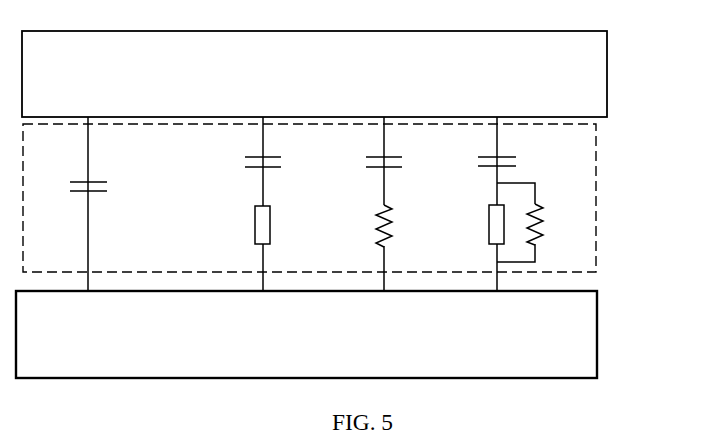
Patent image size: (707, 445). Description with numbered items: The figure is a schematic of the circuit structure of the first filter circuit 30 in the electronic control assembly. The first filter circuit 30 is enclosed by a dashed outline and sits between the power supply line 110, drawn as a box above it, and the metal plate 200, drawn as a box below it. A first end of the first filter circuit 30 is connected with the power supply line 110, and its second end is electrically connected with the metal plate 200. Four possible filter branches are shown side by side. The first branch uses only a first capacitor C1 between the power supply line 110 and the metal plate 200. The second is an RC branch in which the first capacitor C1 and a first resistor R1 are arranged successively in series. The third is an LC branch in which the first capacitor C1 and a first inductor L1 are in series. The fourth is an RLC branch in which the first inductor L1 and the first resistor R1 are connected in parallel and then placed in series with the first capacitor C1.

The power supply line 110 is at (607, 76).
The metal plate 200 is at (597, 334).
The first filter circuit 30 is at (347, 204).
The first capacitor C1 is at (278, 176).
The first resistor R1 is at (362, 224).
The first inductor L1 is at (461, 225).